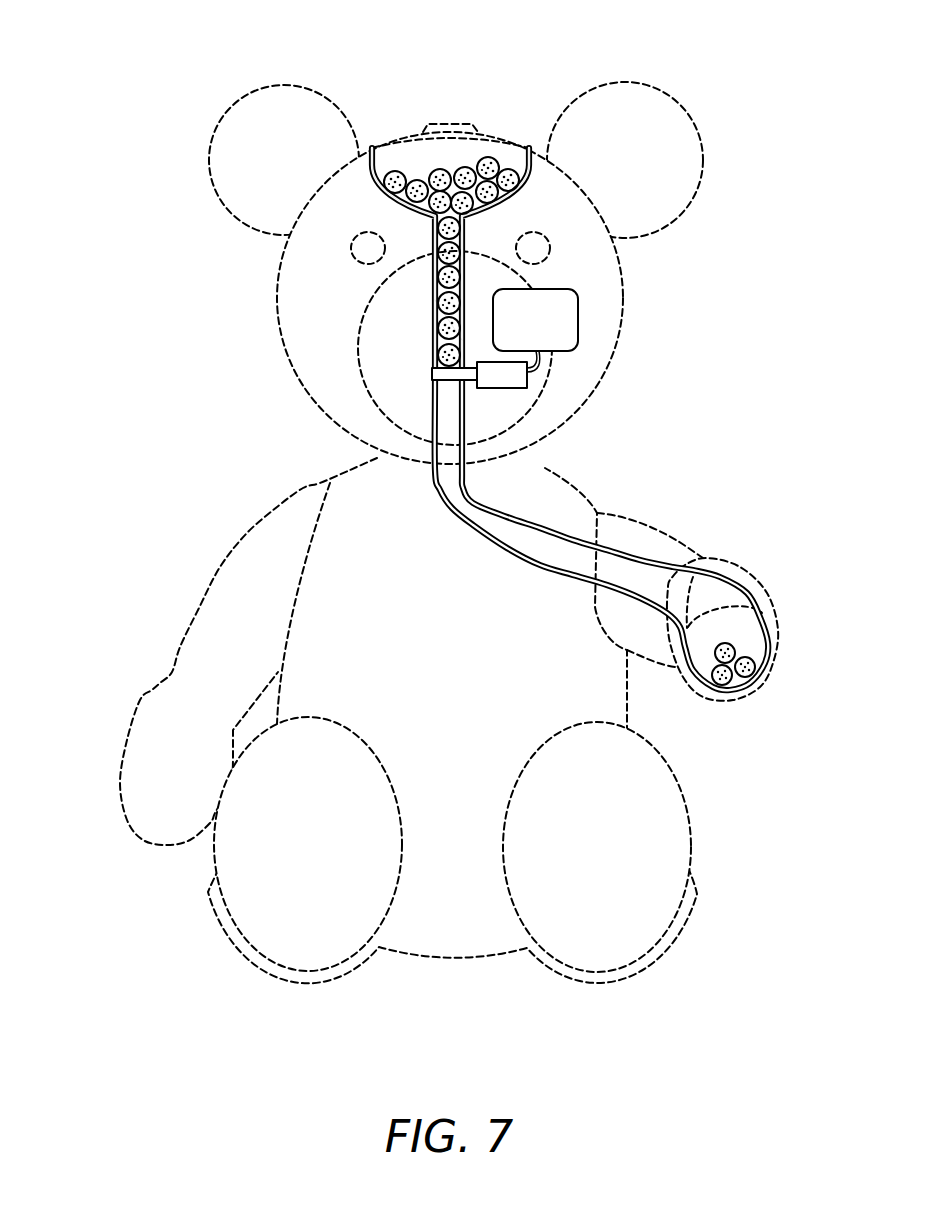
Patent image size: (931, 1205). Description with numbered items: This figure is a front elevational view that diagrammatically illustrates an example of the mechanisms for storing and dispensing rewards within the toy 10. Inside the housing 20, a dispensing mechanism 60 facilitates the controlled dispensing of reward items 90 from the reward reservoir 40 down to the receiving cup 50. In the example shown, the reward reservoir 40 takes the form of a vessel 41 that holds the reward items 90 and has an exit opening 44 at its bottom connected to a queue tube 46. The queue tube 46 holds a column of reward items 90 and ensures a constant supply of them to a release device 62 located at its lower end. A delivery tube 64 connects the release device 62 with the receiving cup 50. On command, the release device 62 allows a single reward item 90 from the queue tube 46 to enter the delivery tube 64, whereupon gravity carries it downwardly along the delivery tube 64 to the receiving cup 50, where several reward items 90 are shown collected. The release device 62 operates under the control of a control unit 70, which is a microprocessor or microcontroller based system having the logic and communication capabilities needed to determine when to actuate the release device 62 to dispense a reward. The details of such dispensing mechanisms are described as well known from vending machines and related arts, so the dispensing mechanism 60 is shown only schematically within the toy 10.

The toy 10 is at (146, 891).
The housing 20 is at (348, 470).
The reward reservoir 40 is at (405, 130).
The vessel 41 is at (372, 178).
The exit opening 44 is at (430, 222).
The queue tube 46 is at (437, 318).
The receiving cup 50 is at (766, 623).
The dispensing mechanism 60 is at (432, 368).
The release device 62 is at (510, 390).
The delivery tube 64 is at (540, 527).
The control unit 70 is at (578, 330).
The reward item 90 is at (492, 162).